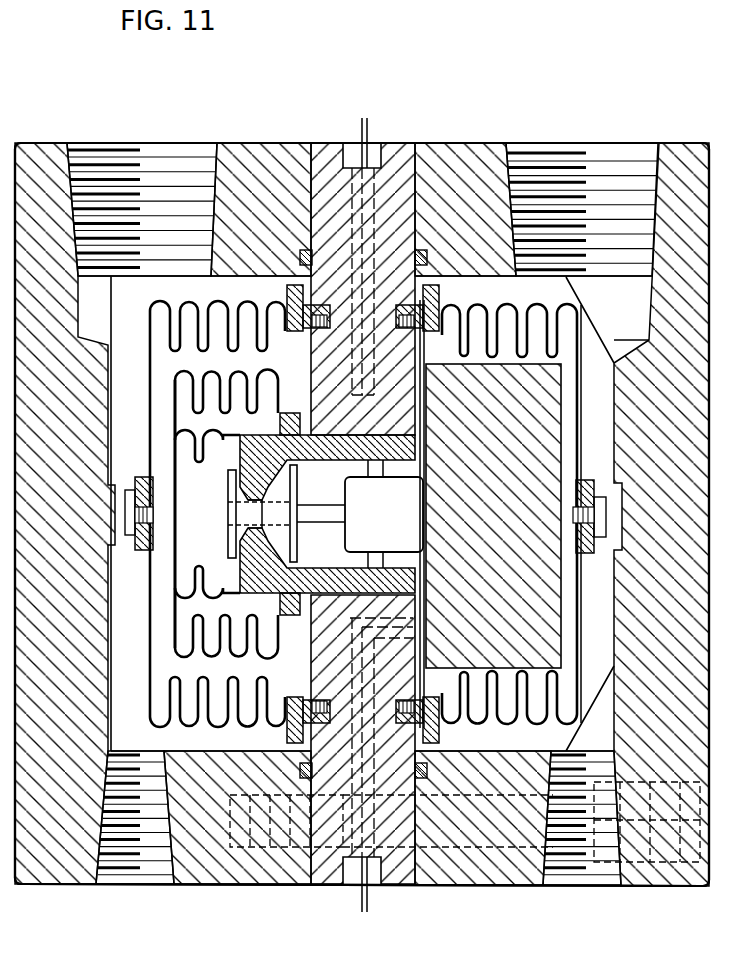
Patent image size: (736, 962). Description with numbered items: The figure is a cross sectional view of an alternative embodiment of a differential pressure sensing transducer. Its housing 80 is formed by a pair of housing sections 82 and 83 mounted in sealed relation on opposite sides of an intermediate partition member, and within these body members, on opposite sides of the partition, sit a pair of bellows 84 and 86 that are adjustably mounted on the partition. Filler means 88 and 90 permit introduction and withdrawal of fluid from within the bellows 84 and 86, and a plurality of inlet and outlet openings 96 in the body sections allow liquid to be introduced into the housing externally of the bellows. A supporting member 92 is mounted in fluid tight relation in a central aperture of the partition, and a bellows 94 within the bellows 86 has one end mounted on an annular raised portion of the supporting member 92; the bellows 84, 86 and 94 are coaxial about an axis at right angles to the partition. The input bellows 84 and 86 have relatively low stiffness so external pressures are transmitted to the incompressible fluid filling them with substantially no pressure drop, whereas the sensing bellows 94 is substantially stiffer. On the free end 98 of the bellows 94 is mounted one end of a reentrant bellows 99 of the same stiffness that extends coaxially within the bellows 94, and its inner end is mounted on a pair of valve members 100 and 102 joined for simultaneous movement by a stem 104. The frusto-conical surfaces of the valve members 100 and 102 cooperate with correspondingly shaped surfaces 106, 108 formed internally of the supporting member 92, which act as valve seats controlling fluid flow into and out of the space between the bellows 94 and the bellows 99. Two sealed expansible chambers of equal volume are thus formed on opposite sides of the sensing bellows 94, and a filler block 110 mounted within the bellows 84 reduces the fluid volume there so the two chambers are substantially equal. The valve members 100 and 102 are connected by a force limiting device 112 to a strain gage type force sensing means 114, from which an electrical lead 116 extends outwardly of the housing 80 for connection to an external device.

The housing 80 is at (487, 120).
The housing section 82 is at (686, 150).
The housing section 83 is at (262, 150).
The bellows 84 is at (505, 312).
The bellows 86 is at (400, 145).
The filler means 88 is at (586, 480).
The filler means 90 is at (140, 476).
The supporting member 92 is at (352, 460).
The bellows 94 is at (274, 380).
The inlet and outlet openings 96 is at (183, 150).
The free end 98 is at (170, 394).
The reentrant bellows 99 is at (208, 468).
The valve member 100 is at (232, 550).
The valve member 102 is at (300, 546).
The stem 104 is at (262, 514).
The valve seat 106 is at (268, 545).
The valve seat 108 is at (272, 478).
The filler block 110 is at (517, 527).
The force limiting device 112 is at (338, 516).
The force sensing means 114 is at (403, 527).
The electrical lead 116 is at (368, 140).